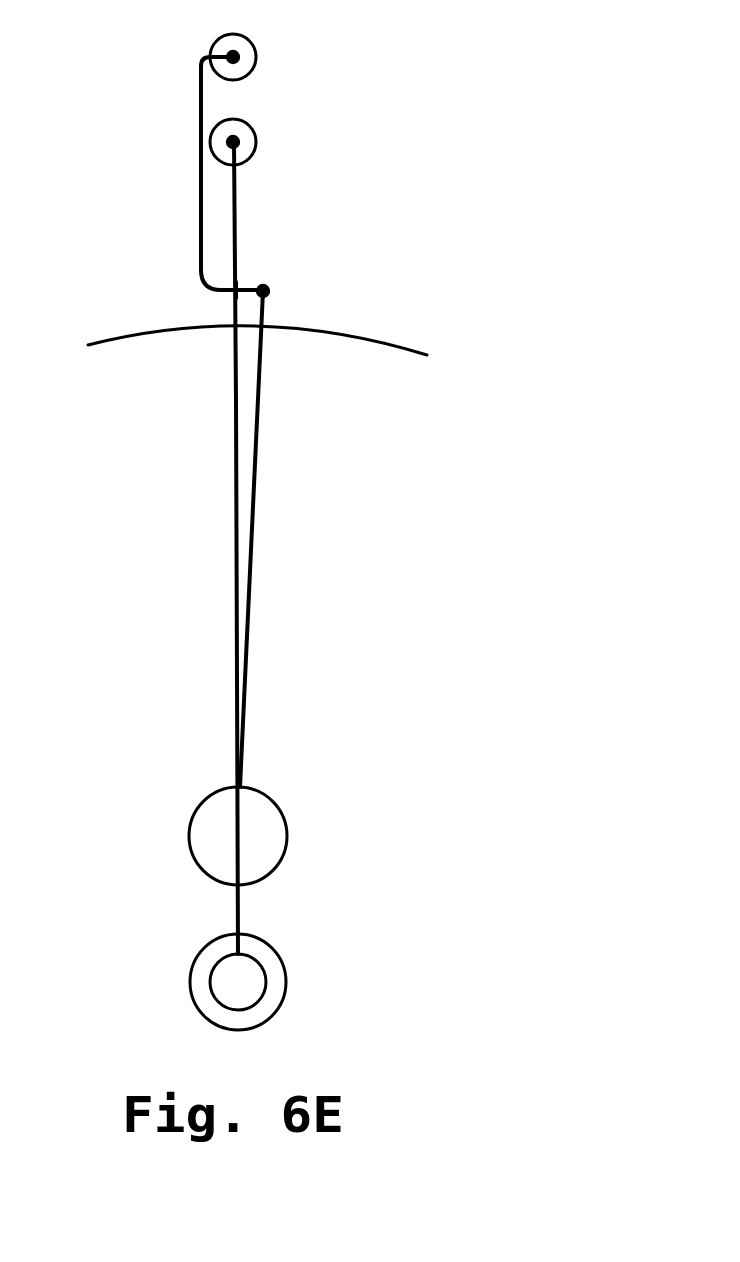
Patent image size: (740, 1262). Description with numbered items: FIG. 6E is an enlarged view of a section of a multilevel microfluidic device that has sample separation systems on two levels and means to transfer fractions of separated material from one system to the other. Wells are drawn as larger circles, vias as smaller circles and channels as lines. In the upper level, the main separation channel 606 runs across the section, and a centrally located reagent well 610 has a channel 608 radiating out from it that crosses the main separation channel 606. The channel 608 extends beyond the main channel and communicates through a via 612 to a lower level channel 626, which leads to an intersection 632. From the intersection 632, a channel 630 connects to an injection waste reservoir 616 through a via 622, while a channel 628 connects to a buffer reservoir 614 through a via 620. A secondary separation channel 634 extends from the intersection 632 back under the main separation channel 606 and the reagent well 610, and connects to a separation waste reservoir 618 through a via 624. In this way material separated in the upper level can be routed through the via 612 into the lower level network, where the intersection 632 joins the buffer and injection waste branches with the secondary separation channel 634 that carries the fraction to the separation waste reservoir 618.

The main separation channel 606 is at (102, 347).
The channel 608 is at (260, 450).
The reagent well 610 is at (287, 833).
The via 612 is at (268, 293).
The buffer reservoir 614 is at (252, 125).
The injection waste reservoir 616 is at (250, 33).
The separation waste reservoir 618 is at (283, 963).
The via 620 is at (240, 145).
The via 622 is at (240, 61).
The via 624 is at (262, 1000).
The lower level channel 626 is at (247, 287).
The channel 628 is at (238, 205).
The channel 630 is at (198, 122).
The intersection 632 is at (230, 295).
The secondary separation channel 634 is at (235, 510).